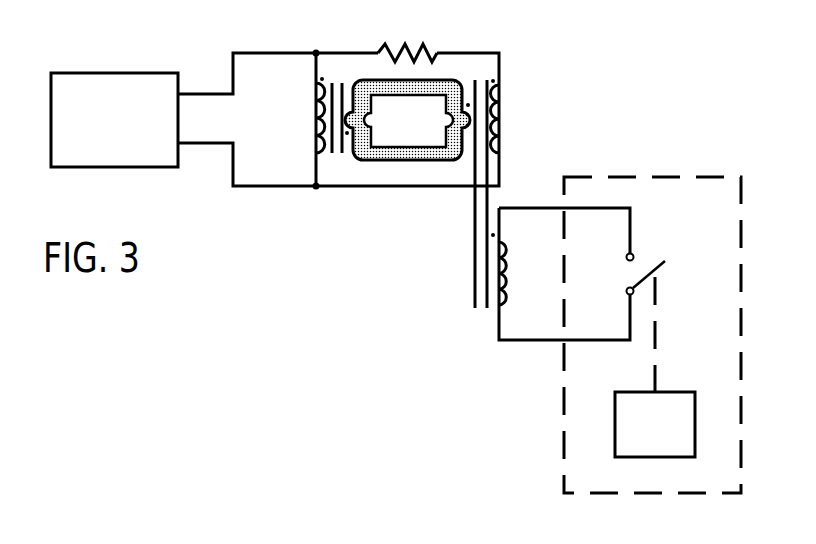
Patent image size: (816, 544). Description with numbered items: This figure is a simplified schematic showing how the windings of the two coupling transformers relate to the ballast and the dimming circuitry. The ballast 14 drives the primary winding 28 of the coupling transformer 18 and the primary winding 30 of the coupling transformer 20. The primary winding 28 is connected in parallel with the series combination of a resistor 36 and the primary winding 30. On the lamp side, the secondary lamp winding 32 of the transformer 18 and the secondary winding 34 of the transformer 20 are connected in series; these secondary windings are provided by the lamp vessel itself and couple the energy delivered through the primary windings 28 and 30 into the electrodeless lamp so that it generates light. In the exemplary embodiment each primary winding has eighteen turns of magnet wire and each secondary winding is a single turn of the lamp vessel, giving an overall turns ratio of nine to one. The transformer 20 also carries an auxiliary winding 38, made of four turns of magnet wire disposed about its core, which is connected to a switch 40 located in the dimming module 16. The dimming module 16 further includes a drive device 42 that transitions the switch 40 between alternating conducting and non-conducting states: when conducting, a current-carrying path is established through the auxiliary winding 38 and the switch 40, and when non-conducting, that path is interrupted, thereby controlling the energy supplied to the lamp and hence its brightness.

The ballast 14 is at (100, 72).
The dimming module 16 is at (654, 177).
The coupling transformer 18 is at (304, 122).
The coupling transformer 20 is at (480, 193).
The primary winding 28 is at (301, 123).
The primary winding 30 is at (498, 97).
The secondary lamp winding 32 is at (355, 110).
The secondary winding 34 is at (450, 108).
The resistor 36 is at (410, 50).
The auxiliary winding 38 is at (500, 262).
The switch 40 is at (643, 272).
The drive device 42 is at (695, 422).